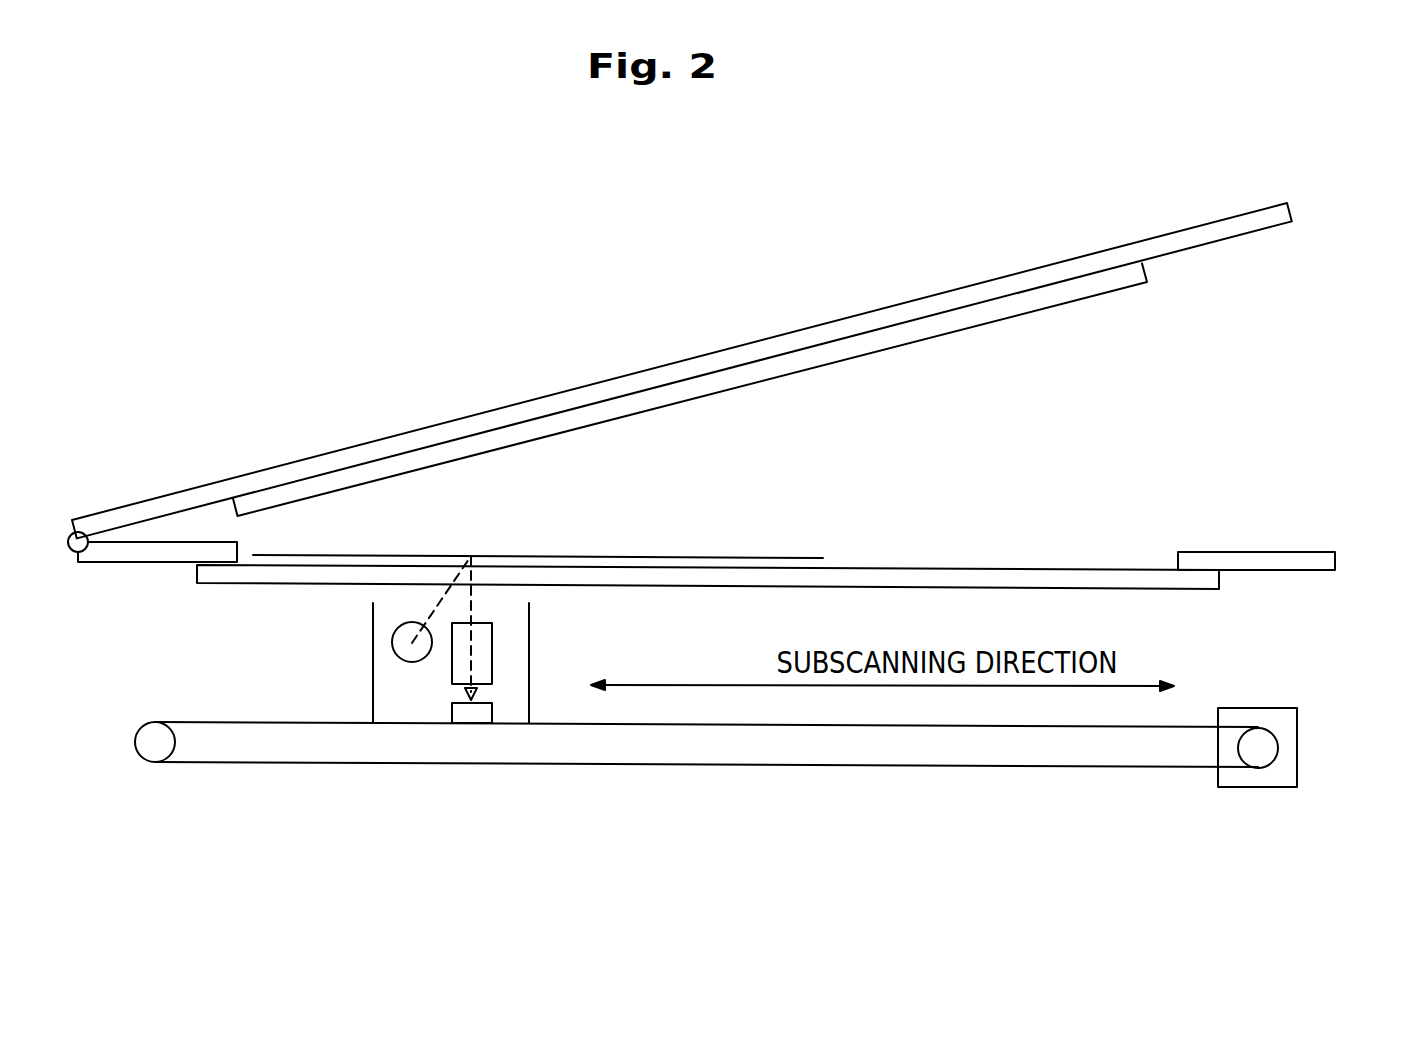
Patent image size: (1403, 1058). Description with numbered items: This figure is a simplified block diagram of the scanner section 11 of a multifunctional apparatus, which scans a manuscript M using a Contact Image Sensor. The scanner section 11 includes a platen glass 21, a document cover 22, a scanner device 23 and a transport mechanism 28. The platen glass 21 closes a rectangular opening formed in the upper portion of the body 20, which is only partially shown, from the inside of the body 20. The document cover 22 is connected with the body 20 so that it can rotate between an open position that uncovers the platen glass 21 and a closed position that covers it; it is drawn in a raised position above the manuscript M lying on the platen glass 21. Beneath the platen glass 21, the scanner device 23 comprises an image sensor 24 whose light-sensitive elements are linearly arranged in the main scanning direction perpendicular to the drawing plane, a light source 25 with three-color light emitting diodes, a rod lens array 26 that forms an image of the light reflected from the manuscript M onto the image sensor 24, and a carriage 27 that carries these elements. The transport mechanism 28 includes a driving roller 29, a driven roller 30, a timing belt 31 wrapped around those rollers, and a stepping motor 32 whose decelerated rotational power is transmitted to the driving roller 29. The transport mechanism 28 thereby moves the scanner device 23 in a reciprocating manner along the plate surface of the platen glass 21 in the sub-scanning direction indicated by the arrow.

The scanner section 11 is at (541, 343).
The body 20 is at (128, 563).
The platen glass 21 is at (965, 567).
The document cover 22 is at (910, 299).
The scanner device 23 is at (360, 633).
The image sensor 24 is at (452, 712).
The light source 25 is at (393, 653).
The rod lens array 26 is at (492, 642).
The carriage 27 is at (529, 668).
The transport mechanism 28 is at (1098, 783).
The driving roller 29 is at (1258, 748).
The driven roller 30 is at (152, 743).
The timing belt 31 is at (870, 767).
The stepping motor 32 is at (1255, 708).
The manuscript M is at (592, 555).